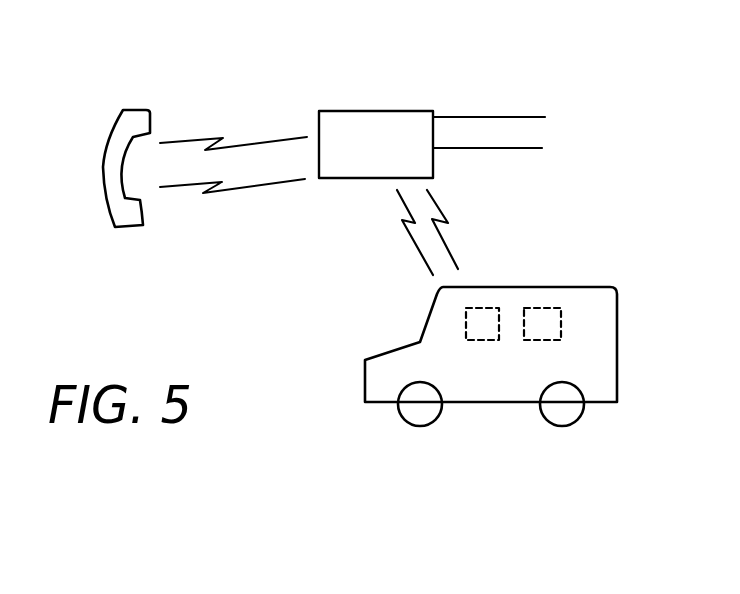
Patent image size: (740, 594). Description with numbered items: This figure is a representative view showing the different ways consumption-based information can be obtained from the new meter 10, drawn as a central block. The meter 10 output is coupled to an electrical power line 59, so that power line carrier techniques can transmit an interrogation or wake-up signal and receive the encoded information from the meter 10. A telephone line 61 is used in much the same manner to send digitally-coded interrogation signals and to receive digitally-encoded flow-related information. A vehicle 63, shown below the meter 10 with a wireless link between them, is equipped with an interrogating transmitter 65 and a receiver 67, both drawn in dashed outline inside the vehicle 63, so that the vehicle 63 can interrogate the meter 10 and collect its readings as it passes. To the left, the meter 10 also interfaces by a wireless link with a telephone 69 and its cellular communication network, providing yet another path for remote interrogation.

The meter 10 is at (333, 111).
The electrical power line 59 is at (497, 117).
The telephone line 61 is at (508, 148).
The vehicle 63 is at (575, 297).
The interrogating transmitter 65 is at (487, 340).
The receiver 67 is at (537, 340).
The telephone 69 is at (150, 110).